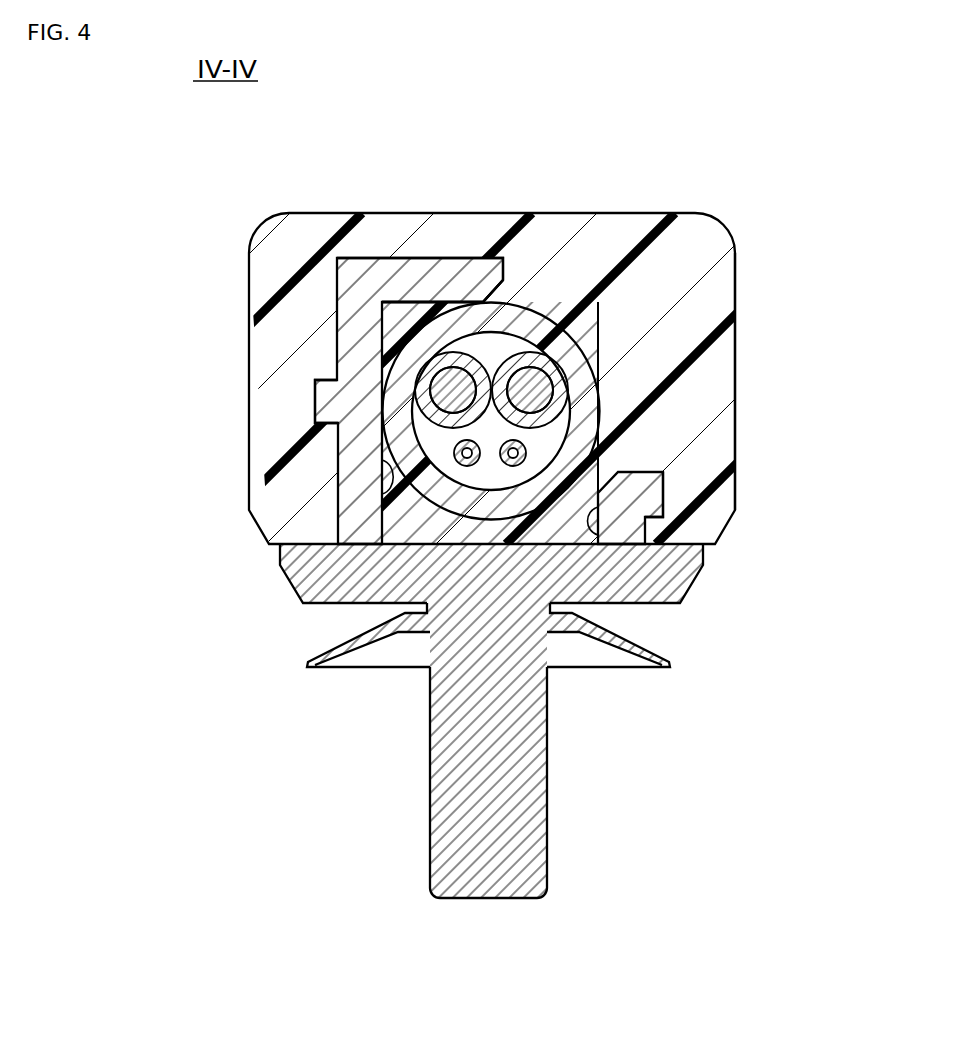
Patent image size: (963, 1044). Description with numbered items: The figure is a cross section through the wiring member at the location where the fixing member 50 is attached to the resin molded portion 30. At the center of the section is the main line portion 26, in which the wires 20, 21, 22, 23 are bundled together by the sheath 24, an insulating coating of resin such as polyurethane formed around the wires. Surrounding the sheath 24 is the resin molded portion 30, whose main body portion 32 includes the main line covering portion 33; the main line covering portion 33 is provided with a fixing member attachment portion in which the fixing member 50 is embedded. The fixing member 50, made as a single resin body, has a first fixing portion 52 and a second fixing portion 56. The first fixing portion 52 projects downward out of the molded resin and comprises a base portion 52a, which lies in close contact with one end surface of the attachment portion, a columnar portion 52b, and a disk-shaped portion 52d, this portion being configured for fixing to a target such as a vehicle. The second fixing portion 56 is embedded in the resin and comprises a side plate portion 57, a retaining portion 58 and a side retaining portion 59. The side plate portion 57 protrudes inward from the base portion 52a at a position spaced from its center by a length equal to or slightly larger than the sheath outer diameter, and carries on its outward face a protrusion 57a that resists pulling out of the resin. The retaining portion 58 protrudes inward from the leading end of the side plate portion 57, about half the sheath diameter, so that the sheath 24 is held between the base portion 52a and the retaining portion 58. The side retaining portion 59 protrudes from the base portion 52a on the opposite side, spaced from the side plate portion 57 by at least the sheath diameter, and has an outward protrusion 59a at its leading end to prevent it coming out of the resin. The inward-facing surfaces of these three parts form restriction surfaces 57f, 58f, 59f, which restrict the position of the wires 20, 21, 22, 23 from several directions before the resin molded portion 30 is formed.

The resin molded portion 30 is at (620, 152).
The main body portion 32 is at (655, 213).
The main line covering portion 33 is at (737, 248).
The second fixing portion 56 is at (349, 254).
The side plate portion 57 is at (337, 347).
The protrusion 57a is at (316, 400).
The restriction surface 57f is at (384, 492).
The retaining portion 58 is at (387, 258).
The restriction surface 58f is at (443, 305).
The side retaining portion 59 is at (614, 473).
The protrusion 59a is at (667, 490).
The restriction surface 59f is at (592, 531).
The main line portion 26 is at (603, 367).
The sheath 24 is at (603, 392).
The wire 20 is at (447, 362).
The wire 21 is at (528, 357).
The wire 22 is at (471, 447).
The wire 23 is at (526, 451).
The fixing member 50 is at (430, 912).
The first fixing portion 52 is at (548, 896).
The base portion 52a is at (686, 590).
The columnar portion 52b is at (548, 808).
The disk-shaped portion 52d is at (672, 666).